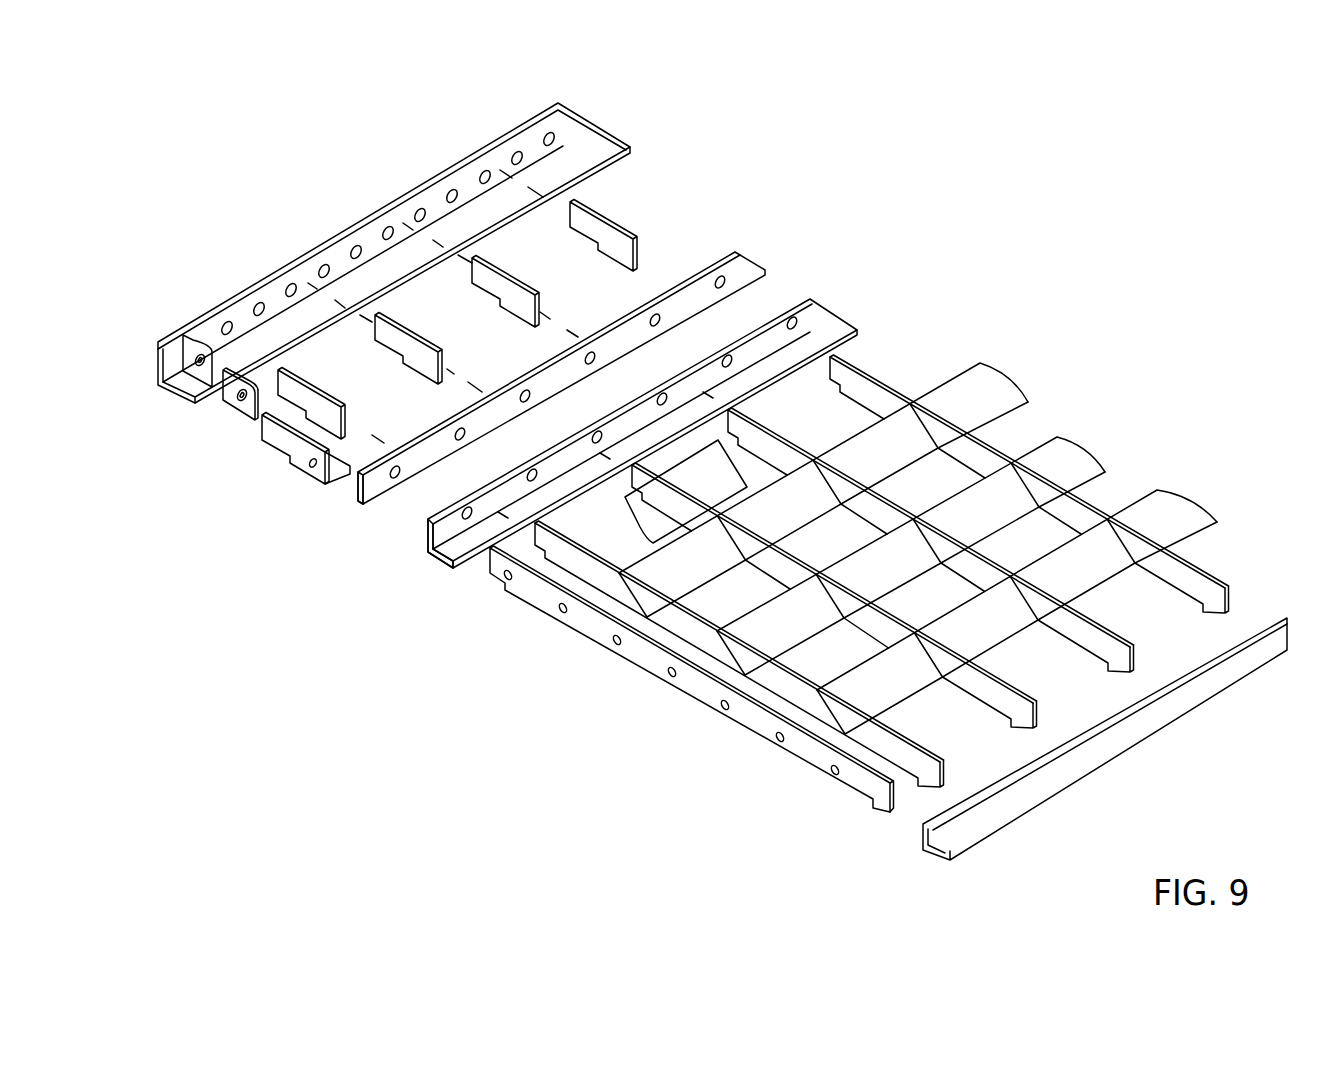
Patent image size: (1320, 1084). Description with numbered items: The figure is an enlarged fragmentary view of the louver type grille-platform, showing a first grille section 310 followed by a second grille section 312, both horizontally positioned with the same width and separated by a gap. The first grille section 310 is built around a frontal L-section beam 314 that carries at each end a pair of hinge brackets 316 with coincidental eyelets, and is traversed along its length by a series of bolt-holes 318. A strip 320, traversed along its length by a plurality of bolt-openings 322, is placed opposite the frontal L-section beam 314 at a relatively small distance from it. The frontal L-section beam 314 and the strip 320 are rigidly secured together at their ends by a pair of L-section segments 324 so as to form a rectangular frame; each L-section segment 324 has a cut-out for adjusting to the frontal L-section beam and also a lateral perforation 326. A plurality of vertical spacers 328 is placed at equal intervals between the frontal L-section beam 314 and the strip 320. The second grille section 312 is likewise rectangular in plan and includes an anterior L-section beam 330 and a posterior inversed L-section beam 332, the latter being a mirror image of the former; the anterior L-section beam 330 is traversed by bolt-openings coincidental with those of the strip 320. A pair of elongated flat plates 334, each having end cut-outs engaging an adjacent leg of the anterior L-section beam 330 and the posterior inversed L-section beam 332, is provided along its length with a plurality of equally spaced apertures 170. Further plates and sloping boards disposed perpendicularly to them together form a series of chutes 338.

The equally spaced apertures 170 is at (833, 772).
The first grille section 310 is at (555, 275).
The second grille section 312 is at (907, 493).
The frontal L-section beam 314 is at (462, 178).
The hinge brackets 316 is at (237, 403).
The bolt-holes 318 is at (417, 214).
The strip 320 is at (380, 488).
The bolt-openings 322 is at (742, 263).
The L-section segments 324 is at (288, 453).
The lateral perforation 326 is at (313, 467).
The vertical spacers 328 is at (600, 232).
The anterior L-section beam 330 is at (470, 535).
The posterior inversed L-section beam 332 is at (1007, 808).
The elongated flat plates 334 is at (703, 700).
The chutes 338 is at (1104, 586).